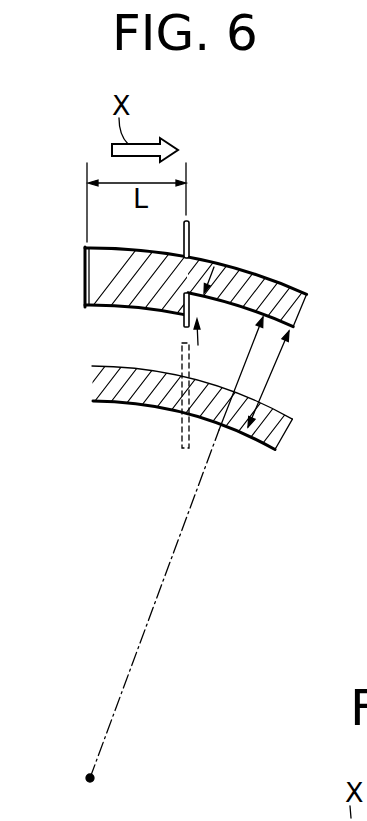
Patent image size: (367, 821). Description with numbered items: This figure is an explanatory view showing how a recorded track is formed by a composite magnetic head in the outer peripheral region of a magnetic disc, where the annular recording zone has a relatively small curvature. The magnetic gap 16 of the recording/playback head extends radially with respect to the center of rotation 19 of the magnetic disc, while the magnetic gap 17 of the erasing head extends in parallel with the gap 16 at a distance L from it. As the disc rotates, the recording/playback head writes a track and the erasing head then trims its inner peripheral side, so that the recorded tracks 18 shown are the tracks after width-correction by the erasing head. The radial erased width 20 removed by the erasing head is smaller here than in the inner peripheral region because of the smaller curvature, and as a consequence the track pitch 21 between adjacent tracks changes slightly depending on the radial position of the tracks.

The magnetic gap of the recording/playback head 16 is at (83, 268).
The magnetic gap of the erasing head 17 is at (190, 232).
The recorded track 18 is at (266, 290).
The center of rotation of the magnetic disc 19 is at (89, 777).
The erased width 20 is at (215, 323).
The track pitch 21 is at (277, 366).